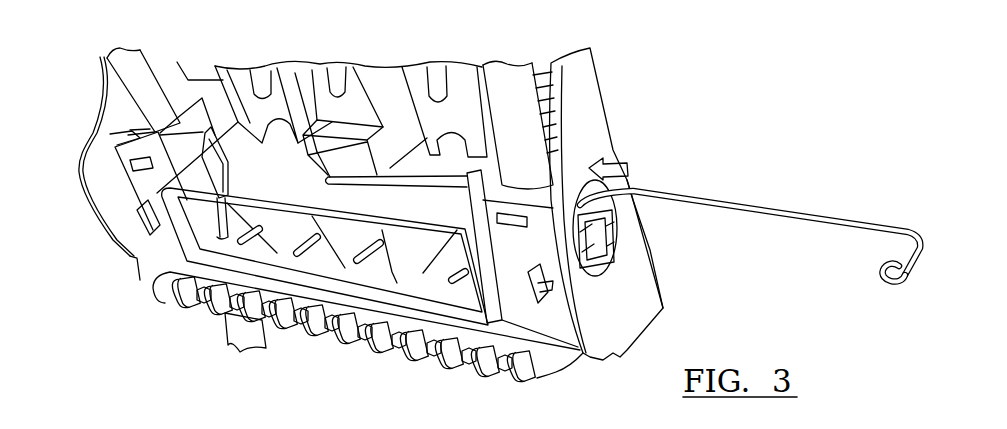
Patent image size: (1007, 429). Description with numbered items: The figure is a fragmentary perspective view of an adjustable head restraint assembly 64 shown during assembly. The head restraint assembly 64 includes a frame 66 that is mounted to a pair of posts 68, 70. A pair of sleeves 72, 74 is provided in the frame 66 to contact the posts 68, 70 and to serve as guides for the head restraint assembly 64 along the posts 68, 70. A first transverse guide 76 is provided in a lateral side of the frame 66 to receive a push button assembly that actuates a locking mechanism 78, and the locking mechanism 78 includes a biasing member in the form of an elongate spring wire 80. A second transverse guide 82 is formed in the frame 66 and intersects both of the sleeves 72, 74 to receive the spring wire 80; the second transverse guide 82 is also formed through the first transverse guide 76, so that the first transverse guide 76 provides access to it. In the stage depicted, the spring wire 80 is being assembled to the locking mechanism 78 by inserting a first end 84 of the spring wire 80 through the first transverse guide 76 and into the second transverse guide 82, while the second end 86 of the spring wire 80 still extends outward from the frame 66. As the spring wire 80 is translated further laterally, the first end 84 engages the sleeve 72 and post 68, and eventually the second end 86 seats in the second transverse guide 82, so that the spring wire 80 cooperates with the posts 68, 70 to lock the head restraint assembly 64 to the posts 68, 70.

The adjustable head restraint assembly 64 is at (608, 64).
The frame 66 is at (610, 105).
The post 68 is at (140, 72).
The post 70 is at (508, 83).
The sleeve 72 is at (130, 136).
The sleeve 74 is at (500, 173).
The first transverse guide 76 is at (640, 231).
The locking mechanism 78 is at (230, 53).
The elongate spring wire 80 is at (745, 200).
The second transverse guide 82 is at (190, 147).
The first end 84 is at (393, 175).
The second end 86 is at (896, 280).